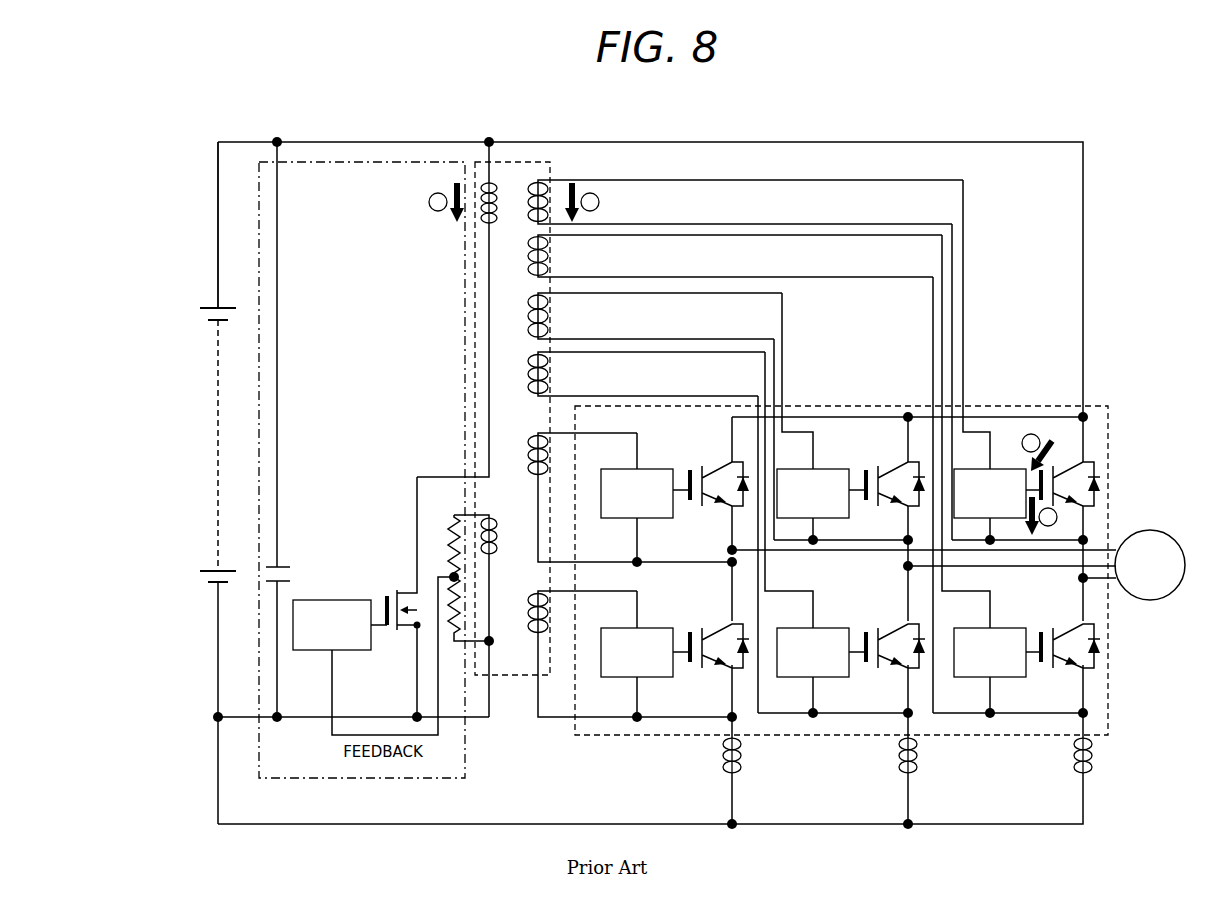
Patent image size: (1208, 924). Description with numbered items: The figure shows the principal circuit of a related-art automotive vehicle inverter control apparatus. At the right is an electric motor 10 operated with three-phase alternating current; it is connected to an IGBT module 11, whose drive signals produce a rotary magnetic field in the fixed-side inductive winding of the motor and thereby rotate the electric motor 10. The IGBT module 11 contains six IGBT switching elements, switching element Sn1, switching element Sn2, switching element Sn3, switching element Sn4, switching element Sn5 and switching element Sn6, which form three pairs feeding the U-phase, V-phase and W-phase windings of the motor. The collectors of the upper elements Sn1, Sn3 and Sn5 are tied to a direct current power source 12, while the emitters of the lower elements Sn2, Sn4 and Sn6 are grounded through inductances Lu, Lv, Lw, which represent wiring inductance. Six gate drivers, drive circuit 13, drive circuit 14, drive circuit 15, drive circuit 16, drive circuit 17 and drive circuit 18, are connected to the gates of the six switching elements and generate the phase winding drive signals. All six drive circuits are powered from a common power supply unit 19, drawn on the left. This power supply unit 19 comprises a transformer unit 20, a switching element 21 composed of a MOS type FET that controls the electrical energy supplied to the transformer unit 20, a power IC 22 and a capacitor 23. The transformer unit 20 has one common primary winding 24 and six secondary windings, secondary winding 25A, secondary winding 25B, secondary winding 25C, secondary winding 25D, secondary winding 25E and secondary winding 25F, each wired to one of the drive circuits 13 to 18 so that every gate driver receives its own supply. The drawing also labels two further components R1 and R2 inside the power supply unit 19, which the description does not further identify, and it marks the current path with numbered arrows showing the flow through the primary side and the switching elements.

The electric motor 10 is at (1160, 530).
The IGBT module 11 is at (1015, 406).
The direct current power source 12 is at (218, 400).
The drive circuit 13 is at (657, 468).
The drive circuit 14 is at (657, 627).
The drive circuit 15 is at (834, 468).
The drive circuit 16 is at (834, 627).
The drive circuit 17 is at (1005, 467).
The drive circuit 18 is at (1005, 627).
The power supply unit 19 is at (373, 160).
The transformer unit 20 is at (515, 679).
The switching element 21 is at (392, 627).
The power IC 22 is at (331, 600).
The capacitor 23 is at (288, 566).
The primary winding 24 is at (481, 222).
The secondary winding 25A is at (538, 192).
The secondary winding 25B is at (547, 264).
The secondary winding 25C is at (547, 321).
The secondary winding 25D is at (547, 378).
The secondary winding 25E is at (549, 456).
The secondary winding 25F is at (549, 613).
The feedback resistor R1 is at (447, 543).
The feedback resistor R2 is at (455, 637).
The switching element Sn1 is at (717, 470).
The switching element Sn2 is at (717, 632).
The switching element Sn3 is at (893, 470).
The switching element Sn4 is at (893, 632).
The switching element Sn5 is at (1102, 462).
The switching element Sn6 is at (1102, 660).
The inductance Lu is at (742, 752).
The inductance Lv is at (918, 752).
The inductance Lw is at (1095, 750).